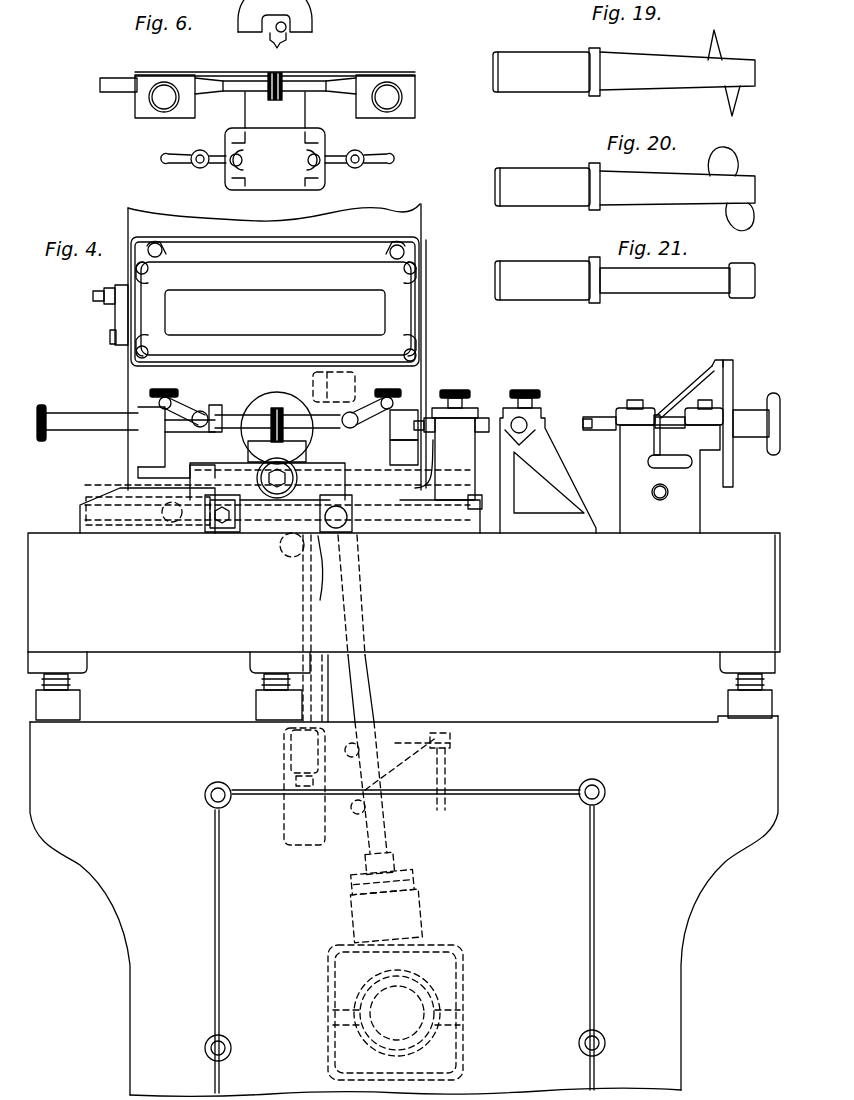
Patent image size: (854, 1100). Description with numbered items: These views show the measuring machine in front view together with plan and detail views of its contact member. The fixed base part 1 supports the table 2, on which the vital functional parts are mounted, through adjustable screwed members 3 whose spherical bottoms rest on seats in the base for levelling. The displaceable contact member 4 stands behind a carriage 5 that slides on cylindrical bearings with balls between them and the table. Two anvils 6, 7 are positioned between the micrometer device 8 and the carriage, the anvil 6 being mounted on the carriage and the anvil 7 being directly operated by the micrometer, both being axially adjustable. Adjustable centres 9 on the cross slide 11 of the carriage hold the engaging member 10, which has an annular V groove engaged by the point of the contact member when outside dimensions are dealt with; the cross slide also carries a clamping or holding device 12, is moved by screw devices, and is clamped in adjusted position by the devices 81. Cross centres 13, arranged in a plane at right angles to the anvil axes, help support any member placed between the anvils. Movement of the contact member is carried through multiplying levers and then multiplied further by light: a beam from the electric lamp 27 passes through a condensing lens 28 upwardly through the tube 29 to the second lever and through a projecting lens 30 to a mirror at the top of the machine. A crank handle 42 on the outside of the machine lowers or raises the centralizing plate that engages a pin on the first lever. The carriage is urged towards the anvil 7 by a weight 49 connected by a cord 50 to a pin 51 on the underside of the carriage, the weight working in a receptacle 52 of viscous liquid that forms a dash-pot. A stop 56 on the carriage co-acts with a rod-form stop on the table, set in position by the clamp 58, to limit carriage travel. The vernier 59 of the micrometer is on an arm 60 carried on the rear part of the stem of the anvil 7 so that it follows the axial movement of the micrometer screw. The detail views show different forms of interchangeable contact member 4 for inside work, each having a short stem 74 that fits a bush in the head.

In FIG. 4, the fixed base part 1 is at (404, 906).
In FIG. 4, the table 2 is at (404, 603).
In FIG. 4, the adjustable screwed members 3 is at (66, 686).
In FIG. 6, the contact member 4 is at (282, 45).
In FIG. 19, the contact member 4 is at (677, 73).
In FIG. 20, the contact member 4 is at (677, 189).
In FIG. 21, the contact member 4 is at (663, 283).
In FIG. 4, the carriage 5 is at (100, 512).
In FIG. 4, the anvil 6 is at (480, 415).
In FIG. 4, the anvil 7 is at (600, 419).
In FIG. 4, the micrometer device 8 is at (748, 420).
In FIG. 6, the adjustable centres 9 is at (206, 84).
In FIG. 4, the adjustable centres 9 is at (112, 422).
In FIG. 6, the engaging member 10 is at (268, 88).
In FIG. 4, the engaging member 10 is at (272, 422).
In FIG. 4, the cross slide 11 is at (227, 466).
In FIG. 4, the clamping or holding device 12 is at (294, 400).
In FIG. 6, the cross centres 13 is at (272, 73).
In FIG. 4, the cross centres 13 is at (526, 428).
In FIG. 4, the electric lamp 27 is at (465, 992).
In FIG. 4, the condensing lens 28 is at (420, 876).
In FIG. 4, the tube 29 is at (365, 684).
In FIG. 4, the projecting lens 30 is at (340, 372).
In FIG. 4, the crank handle 42 is at (120, 303).
In FIG. 4, the weight 49 is at (284, 745).
In FIG. 4, the cord 50 is at (302, 590).
In FIG. 4, the pin 51 is at (328, 568).
In FIG. 4, the receptacle 52 is at (329, 702).
In FIG. 4, the stop 56 is at (247, 533).
In FIG. 4, the clamp 58 is at (356, 535).
In FIG. 4, the vernier 59 is at (713, 363).
In FIG. 4, the arm 60 is at (690, 386).
In FIG. 19, the stem 74 is at (546, 72).
In FIG. 20, the stem 74 is at (547, 186).
In FIG. 21, the stem 74 is at (547, 280).
In FIG. 6, the clamping devices 81 is at (203, 167).
In FIG. 4, the clamping devices 81 is at (199, 410).